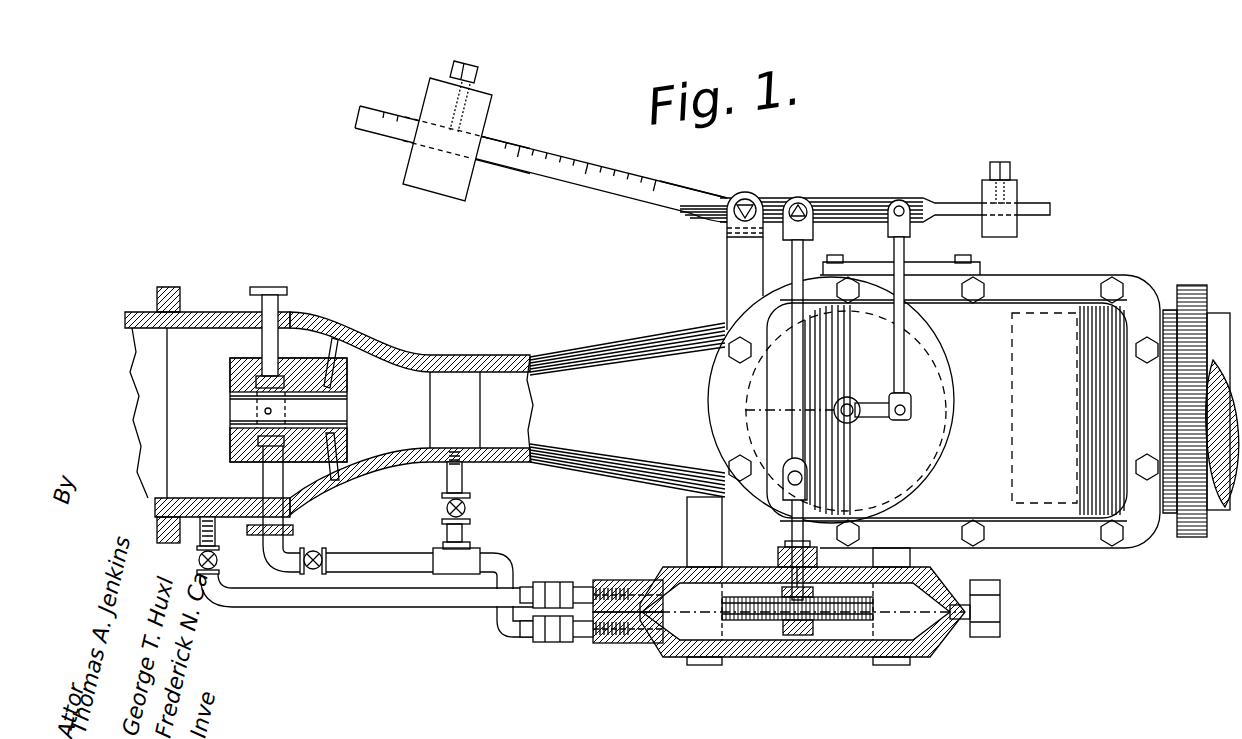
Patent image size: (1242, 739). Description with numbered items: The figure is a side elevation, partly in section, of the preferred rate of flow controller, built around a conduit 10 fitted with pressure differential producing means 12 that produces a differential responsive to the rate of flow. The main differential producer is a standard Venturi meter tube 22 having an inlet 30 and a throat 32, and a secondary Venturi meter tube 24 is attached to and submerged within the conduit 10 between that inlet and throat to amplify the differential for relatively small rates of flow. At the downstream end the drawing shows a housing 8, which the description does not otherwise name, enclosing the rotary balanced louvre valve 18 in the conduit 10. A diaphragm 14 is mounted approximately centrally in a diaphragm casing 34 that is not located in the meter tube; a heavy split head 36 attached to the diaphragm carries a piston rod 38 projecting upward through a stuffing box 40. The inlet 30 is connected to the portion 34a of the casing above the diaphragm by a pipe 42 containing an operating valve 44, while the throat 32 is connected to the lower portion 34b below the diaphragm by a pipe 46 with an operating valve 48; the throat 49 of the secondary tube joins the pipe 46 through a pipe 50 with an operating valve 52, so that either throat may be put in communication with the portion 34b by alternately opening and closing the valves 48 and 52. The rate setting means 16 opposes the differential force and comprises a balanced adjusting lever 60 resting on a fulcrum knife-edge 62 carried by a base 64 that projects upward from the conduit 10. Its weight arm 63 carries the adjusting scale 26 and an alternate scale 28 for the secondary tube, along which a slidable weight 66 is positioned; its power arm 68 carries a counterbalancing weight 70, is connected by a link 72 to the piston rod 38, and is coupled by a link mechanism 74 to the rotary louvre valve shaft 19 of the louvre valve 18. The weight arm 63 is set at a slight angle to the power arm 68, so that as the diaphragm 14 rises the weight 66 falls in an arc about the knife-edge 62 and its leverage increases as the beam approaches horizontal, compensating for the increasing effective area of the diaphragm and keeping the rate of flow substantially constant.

The damper housing 8 is at (992, 320).
The conduit 10 is at (143, 337).
The pressure differential producing means 12 is at (317, 320).
The diaphragm 14 is at (667, 634).
The rate setting means 16 is at (396, 107).
The rotary balanced louvre valve 18 is at (920, 457).
The rotary louvre valve shaft 19 is at (860, 428).
The main Venturi meter tube 22 is at (348, 340).
The secondary Venturi meter tube 24 is at (238, 360).
The adjusting scale 26 is at (495, 138).
The scale 28 is at (492, 162).
The inlet 30 is at (200, 488).
The throat 32 is at (455, 390).
The diaphragm casing 34 is at (942, 644).
The portion of the diaphragm casing above the diaphragm 34a is at (640, 580).
The lower portion of the diaphragm casing 34b is at (615, 643).
The split head 36 is at (830, 620).
The piston rod 38 is at (797, 578).
The stuffing box 40 is at (782, 556).
The pipe 42 is at (275, 605).
The operating valve 44 is at (220, 561).
The pipe 46 is at (506, 578).
The operating valve 48 is at (468, 507).
The throat of the secondary Venturi meter tube 49 is at (257, 410).
The pipe 50 is at (355, 553).
The operating valve 52 is at (317, 549).
The balanced adjusting lever 60 is at (665, 196).
The fulcrum knife-edge 62 is at (736, 199).
The weight arm 63 is at (537, 152).
The base 64 is at (735, 256).
The slidable weight 66 is at (441, 90).
The power arm 68 is at (832, 200).
The counterbalancing weight 70 is at (1016, 188).
The link 72 is at (802, 380).
The link mechanism 74 is at (892, 314).